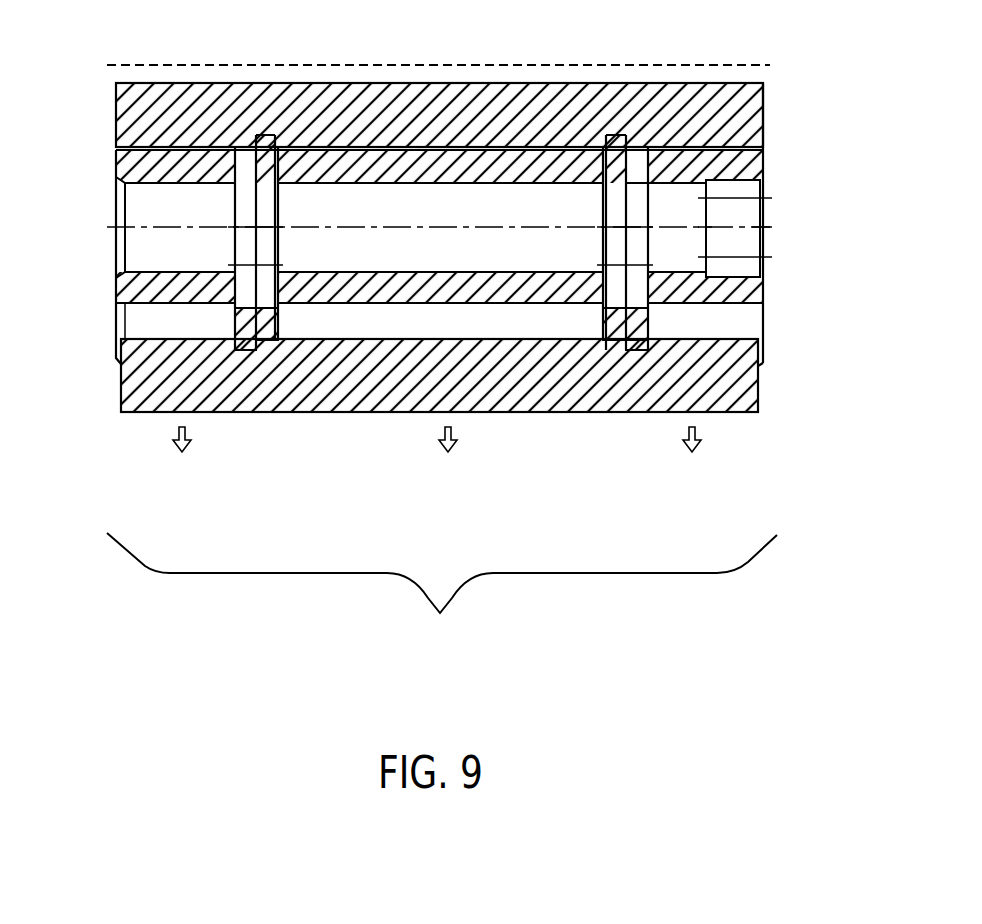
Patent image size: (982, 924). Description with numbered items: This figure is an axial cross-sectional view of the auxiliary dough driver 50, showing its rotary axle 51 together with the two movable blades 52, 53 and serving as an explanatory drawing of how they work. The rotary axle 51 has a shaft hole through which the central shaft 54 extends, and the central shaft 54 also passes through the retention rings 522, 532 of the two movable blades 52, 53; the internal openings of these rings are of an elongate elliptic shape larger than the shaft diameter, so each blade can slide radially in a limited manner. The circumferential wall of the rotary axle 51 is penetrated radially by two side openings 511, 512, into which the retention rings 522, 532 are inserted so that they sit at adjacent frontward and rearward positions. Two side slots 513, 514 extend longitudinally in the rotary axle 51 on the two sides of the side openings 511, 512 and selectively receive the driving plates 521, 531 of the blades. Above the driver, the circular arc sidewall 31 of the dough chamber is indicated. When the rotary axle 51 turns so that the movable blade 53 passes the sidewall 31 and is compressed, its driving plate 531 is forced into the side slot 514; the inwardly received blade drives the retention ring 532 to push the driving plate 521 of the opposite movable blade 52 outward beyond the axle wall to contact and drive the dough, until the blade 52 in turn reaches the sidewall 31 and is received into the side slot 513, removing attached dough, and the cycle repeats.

The sidewall 31 is at (343, 65).
The movable blade 53 is at (649, 84).
The driving plate 531 is at (502, 98).
The side slot 514 is at (766, 112).
The rotary axle 51 is at (772, 163).
The central shaft 54 is at (132, 213).
The side opening 512 is at (233, 323).
The side slot 513 is at (753, 313).
The side opening 511 is at (647, 330).
The movable blade 52 is at (420, 427).
The driving plate 521 is at (567, 392).
The retention ring 522 is at (640, 338).
The retention ring 532 is at (617, 325).
The auxiliary dough driver 50 is at (442, 597).